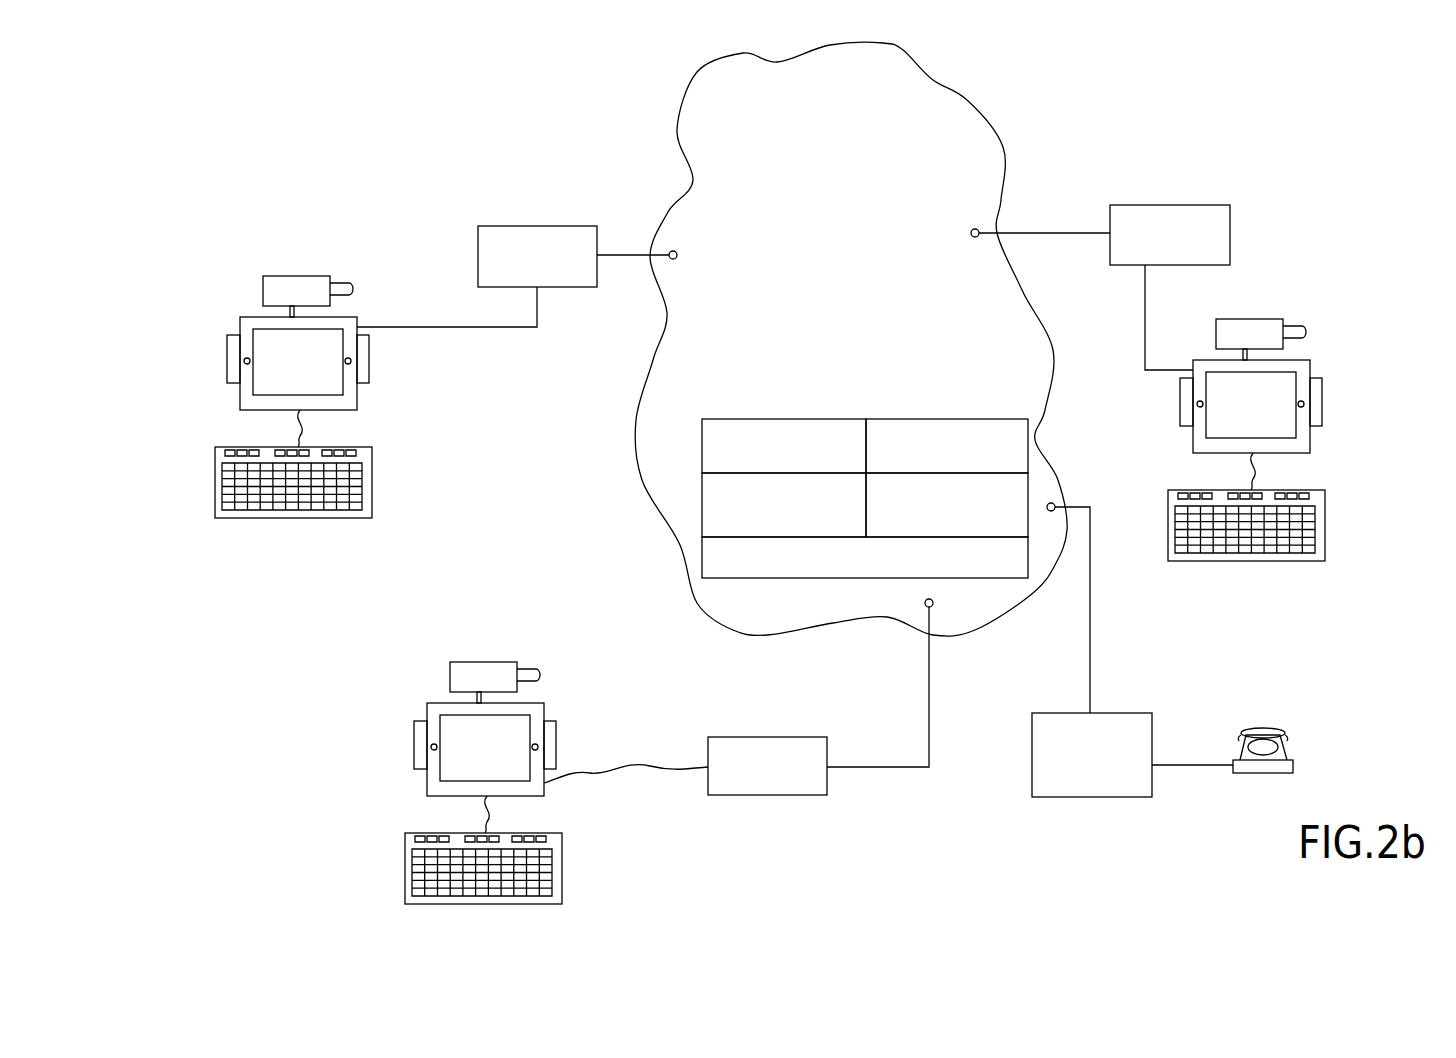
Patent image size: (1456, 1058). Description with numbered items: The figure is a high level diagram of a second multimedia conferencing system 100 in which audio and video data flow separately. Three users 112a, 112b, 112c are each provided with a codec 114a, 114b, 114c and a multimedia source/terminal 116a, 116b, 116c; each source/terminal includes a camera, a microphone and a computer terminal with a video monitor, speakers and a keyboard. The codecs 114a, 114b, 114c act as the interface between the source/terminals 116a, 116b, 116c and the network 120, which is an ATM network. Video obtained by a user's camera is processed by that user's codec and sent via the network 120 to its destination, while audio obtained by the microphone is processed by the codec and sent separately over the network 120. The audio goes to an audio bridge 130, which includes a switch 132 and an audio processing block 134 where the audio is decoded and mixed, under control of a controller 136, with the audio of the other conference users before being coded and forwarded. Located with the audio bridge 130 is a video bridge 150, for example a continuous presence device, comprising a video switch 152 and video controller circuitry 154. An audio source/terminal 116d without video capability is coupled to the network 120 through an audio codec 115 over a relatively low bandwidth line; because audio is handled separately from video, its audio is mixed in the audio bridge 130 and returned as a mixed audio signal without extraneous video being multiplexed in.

The system 100 is at (1180, 145).
The user 112a is at (433, 190).
The user 112b is at (1360, 182).
The user 112c is at (627, 821).
The codec 114a is at (533, 226).
The codec 114b is at (1160, 205).
The codec 114c is at (768, 737).
The audio codec 115 is at (1088, 797).
The multimedia source/terminal 116a is at (222, 288).
The multimedia source/terminal 116b is at (1365, 340).
The multimedia source/terminal 116c is at (410, 680).
The audio source/terminal 116d is at (1198, 700).
The network 120 is at (905, 50).
The audio bridge 130 is at (690, 512).
The switch 132 is at (735, 419).
The audio processing block 134 is at (702, 493).
The controller 136 is at (720, 578).
The video bridge 150 is at (978, 400).
The video switch 152 is at (948, 419).
The video controller circuitry 154 is at (1030, 493).